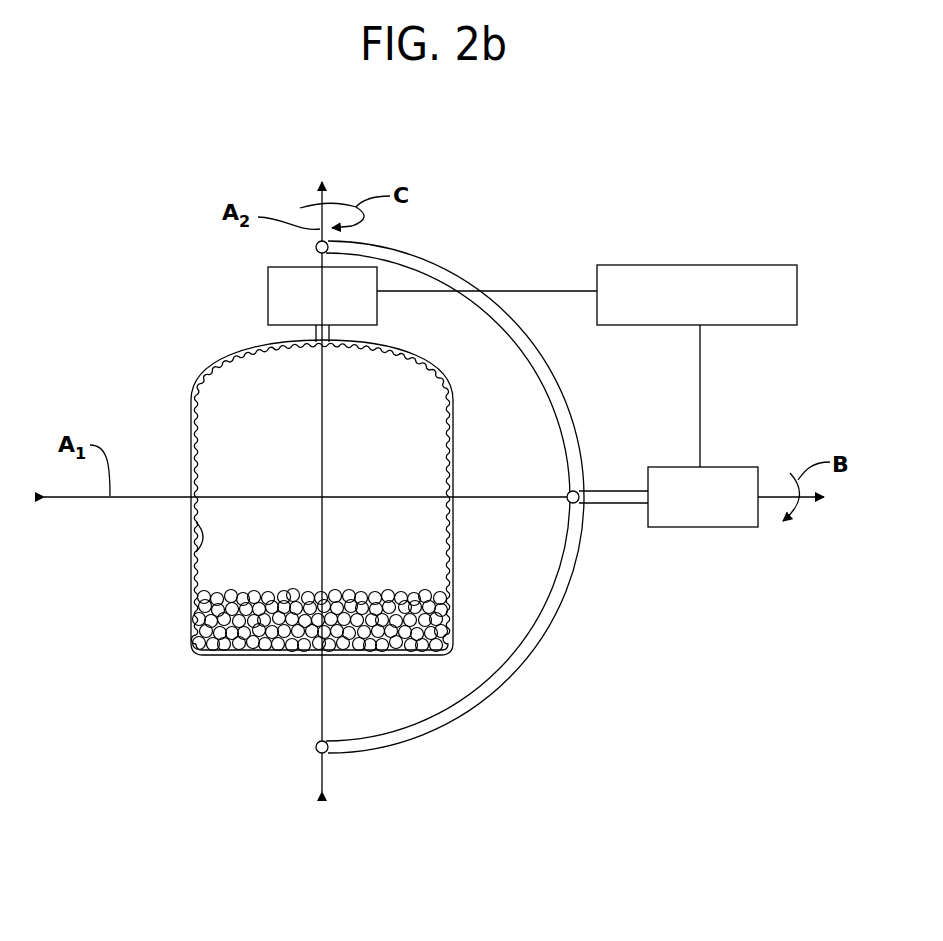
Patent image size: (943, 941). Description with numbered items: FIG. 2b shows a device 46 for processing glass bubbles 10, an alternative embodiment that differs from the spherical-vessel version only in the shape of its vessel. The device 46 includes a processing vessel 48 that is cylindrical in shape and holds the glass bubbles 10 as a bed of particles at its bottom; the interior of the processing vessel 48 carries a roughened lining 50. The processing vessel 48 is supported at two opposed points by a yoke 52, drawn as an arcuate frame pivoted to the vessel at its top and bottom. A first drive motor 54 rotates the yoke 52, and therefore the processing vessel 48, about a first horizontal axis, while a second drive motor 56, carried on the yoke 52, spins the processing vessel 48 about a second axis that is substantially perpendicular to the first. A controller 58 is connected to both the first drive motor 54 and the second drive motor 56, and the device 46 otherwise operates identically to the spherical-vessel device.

The glass bubbles 10 is at (364, 587).
The device 46 is at (579, 202).
The processing vessel 48 is at (191, 402).
The roughened lining 50 is at (200, 540).
The yoke 52 is at (558, 397).
The first drive motor 54 is at (712, 527).
The second drive motor 56 is at (268, 290).
The controller 58 is at (710, 265).